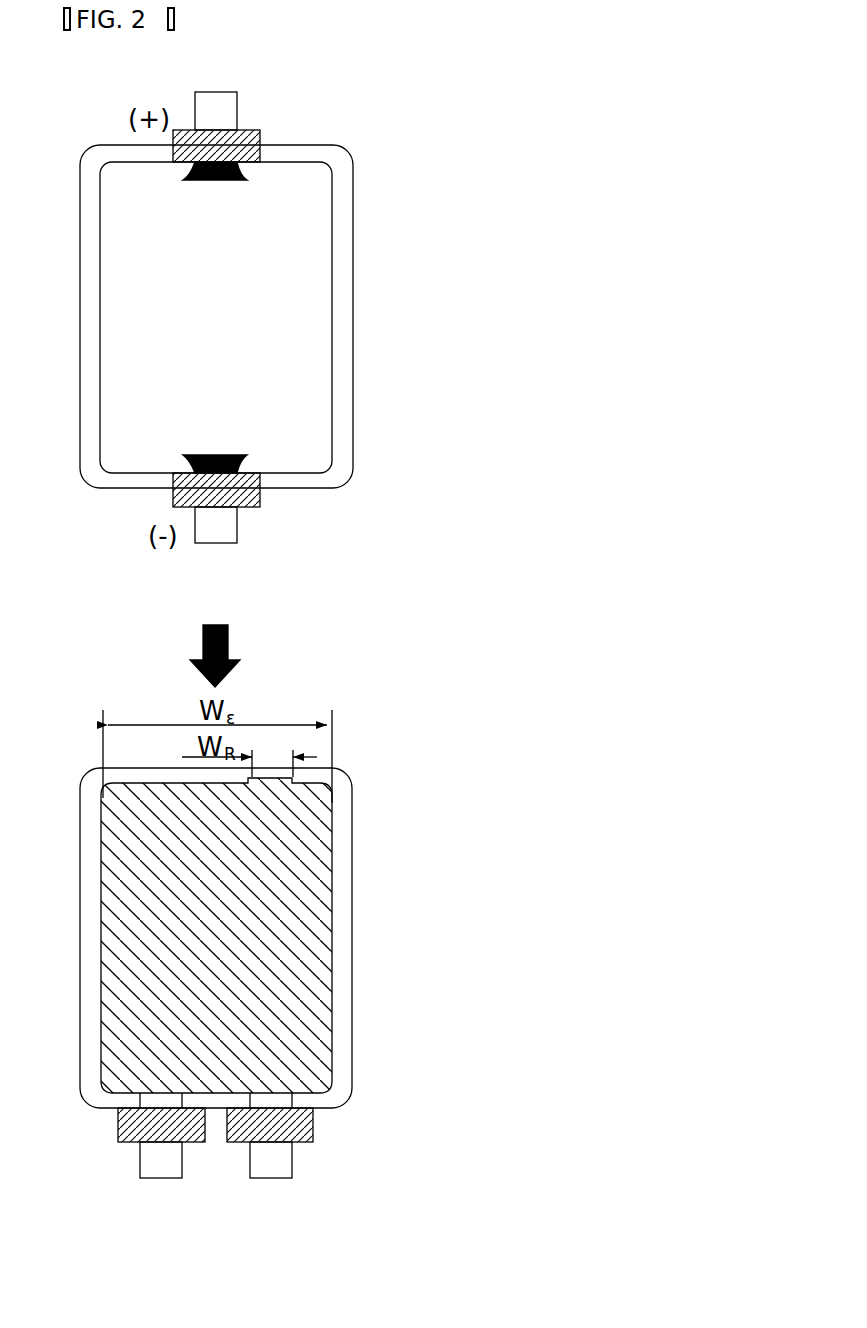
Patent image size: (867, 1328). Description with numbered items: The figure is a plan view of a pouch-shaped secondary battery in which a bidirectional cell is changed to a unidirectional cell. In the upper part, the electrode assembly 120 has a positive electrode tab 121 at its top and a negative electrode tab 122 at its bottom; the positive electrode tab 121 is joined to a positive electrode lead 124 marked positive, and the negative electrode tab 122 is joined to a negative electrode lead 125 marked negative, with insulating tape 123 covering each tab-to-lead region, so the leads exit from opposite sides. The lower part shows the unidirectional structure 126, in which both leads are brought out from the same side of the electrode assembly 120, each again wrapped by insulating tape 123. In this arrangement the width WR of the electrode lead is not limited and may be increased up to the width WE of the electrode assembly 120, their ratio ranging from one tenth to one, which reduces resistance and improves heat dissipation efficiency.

The electrode assembly 120 is at (347, 330).
The positive electrode tab 121 is at (240, 170).
The negative electrode tab 122 is at (240, 465).
The insulating tape 123 is at (237, 142).
The positive electrode lead 124 is at (237, 105).
The negative electrode lead 125 is at (243, 534).
The unidirectional structure 126 is at (298, 1020).